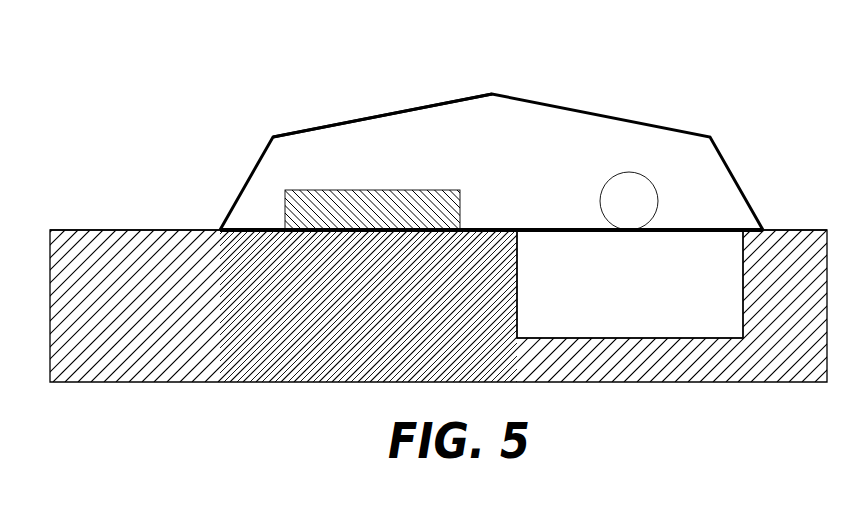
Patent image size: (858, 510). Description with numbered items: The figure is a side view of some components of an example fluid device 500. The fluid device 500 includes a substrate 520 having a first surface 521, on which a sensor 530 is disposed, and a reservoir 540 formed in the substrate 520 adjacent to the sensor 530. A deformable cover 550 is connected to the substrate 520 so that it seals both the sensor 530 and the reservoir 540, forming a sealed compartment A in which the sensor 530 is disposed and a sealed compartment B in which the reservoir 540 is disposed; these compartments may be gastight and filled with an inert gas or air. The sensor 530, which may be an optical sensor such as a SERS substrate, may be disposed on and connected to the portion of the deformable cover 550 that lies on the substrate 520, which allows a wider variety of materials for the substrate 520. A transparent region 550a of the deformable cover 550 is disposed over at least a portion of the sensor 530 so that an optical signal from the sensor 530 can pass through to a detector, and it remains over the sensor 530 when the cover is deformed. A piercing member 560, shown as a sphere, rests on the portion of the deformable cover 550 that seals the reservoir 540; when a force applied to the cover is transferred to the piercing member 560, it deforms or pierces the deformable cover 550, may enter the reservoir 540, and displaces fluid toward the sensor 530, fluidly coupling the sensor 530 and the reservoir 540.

The fluid device 500 is at (429, 206).
The substrate 520 is at (803, 263).
The first surface 521 is at (102, 230).
The sensor 530 is at (350, 221).
The reservoir 540 is at (661, 333).
The deformable cover 550 is at (648, 120).
The transparent region 550a is at (442, 96).
The piercing member 560 is at (630, 172).
The sealed compartment A is at (492, 131).
The sealed compartment B is at (598, 263).